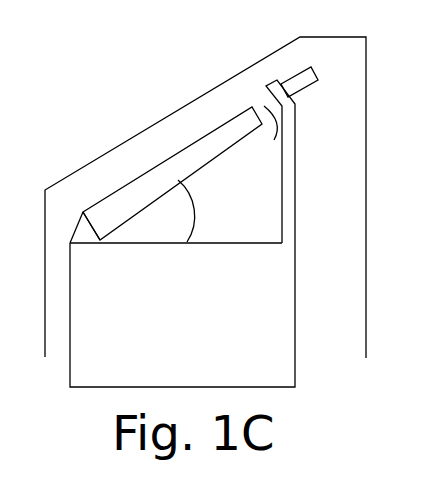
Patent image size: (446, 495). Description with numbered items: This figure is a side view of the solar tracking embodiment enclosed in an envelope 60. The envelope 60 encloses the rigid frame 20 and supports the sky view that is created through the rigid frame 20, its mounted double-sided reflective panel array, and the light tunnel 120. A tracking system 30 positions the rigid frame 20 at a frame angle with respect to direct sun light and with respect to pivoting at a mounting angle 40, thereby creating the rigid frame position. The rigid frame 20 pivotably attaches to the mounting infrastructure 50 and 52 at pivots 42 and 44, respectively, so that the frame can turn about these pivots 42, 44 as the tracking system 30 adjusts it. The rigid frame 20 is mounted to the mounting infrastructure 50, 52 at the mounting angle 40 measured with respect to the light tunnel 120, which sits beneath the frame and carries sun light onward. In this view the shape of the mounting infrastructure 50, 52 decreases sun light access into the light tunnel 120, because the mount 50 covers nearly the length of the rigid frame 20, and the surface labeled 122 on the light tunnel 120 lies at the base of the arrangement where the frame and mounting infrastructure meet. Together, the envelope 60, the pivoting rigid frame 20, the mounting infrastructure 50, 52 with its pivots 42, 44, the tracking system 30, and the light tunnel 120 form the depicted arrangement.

The envelope 60 is at (200, 96).
The rigid frame 20 is at (150, 171).
The tracking system 30 is at (300, 58).
The mount 50 is at (295, 180).
The mounting angle 40 is at (194, 218).
The pivot 42 is at (257, 140).
The pivot 44 is at (100, 239).
The mounting infrastructure 52 is at (72, 247).
The base top surface 122 is at (241, 243).
The light tunnel 120 is at (296, 348).